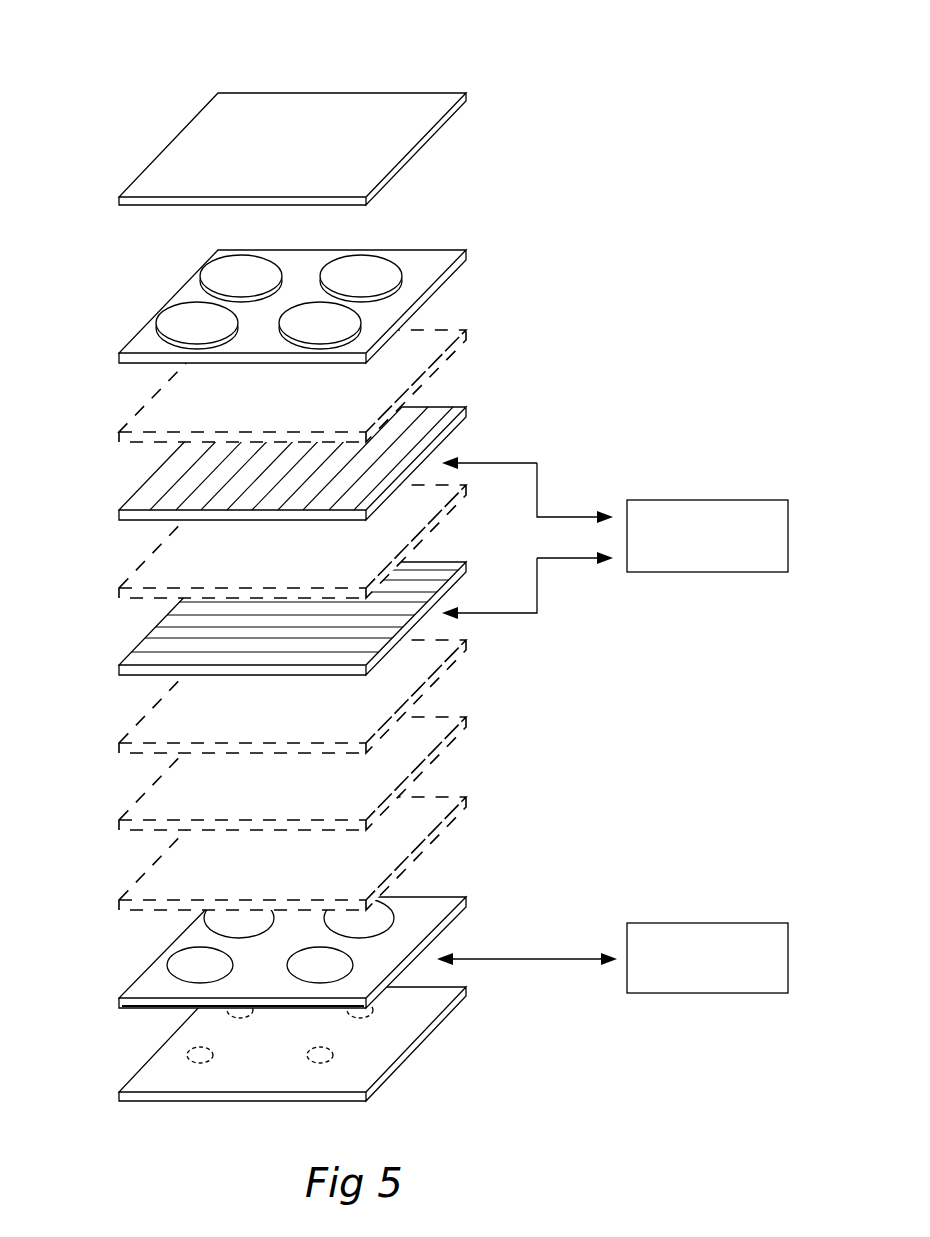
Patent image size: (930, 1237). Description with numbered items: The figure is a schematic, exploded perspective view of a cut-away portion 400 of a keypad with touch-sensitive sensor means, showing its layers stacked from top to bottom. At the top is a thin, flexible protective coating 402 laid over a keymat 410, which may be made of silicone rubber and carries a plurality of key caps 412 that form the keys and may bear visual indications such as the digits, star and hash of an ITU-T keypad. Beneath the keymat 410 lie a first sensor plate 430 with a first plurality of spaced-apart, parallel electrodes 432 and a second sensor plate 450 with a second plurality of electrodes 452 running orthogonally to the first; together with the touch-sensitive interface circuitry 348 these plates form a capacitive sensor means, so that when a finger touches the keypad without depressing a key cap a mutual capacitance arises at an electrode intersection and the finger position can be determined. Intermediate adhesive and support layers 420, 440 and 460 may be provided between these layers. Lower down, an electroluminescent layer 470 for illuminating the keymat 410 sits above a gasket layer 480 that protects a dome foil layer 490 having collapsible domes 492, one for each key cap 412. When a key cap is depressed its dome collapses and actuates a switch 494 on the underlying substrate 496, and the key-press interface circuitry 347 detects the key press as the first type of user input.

The cut-away portion 400 is at (76, 62).
The protective coating 402 is at (180, 137).
The keymat 410 is at (301, 306).
The key caps 412 is at (353, 322).
The intermediate adhesive and support layer 420 is at (168, 390).
The first sensor plate 430 is at (323, 463).
The first electrodes 432 is at (430, 426).
The intermediate adhesive and support layer 440 is at (168, 543).
The second sensor plate 450 is at (297, 602).
The second electrodes 452 is at (453, 563).
The intermediate adhesive and support layer 460 is at (168, 702).
The electroluminescent layer 470 is at (168, 780).
The gasket layer 480 is at (168, 862).
The dome foil layer 490 is at (183, 944).
The collapsible domes 492 is at (353, 967).
The switch 494 is at (330, 1012).
The substrate 496 is at (177, 1057).
The touch-sensitive interface circuitry 348 is at (684, 534).
The key-press interface circuitry 347 is at (699, 954).